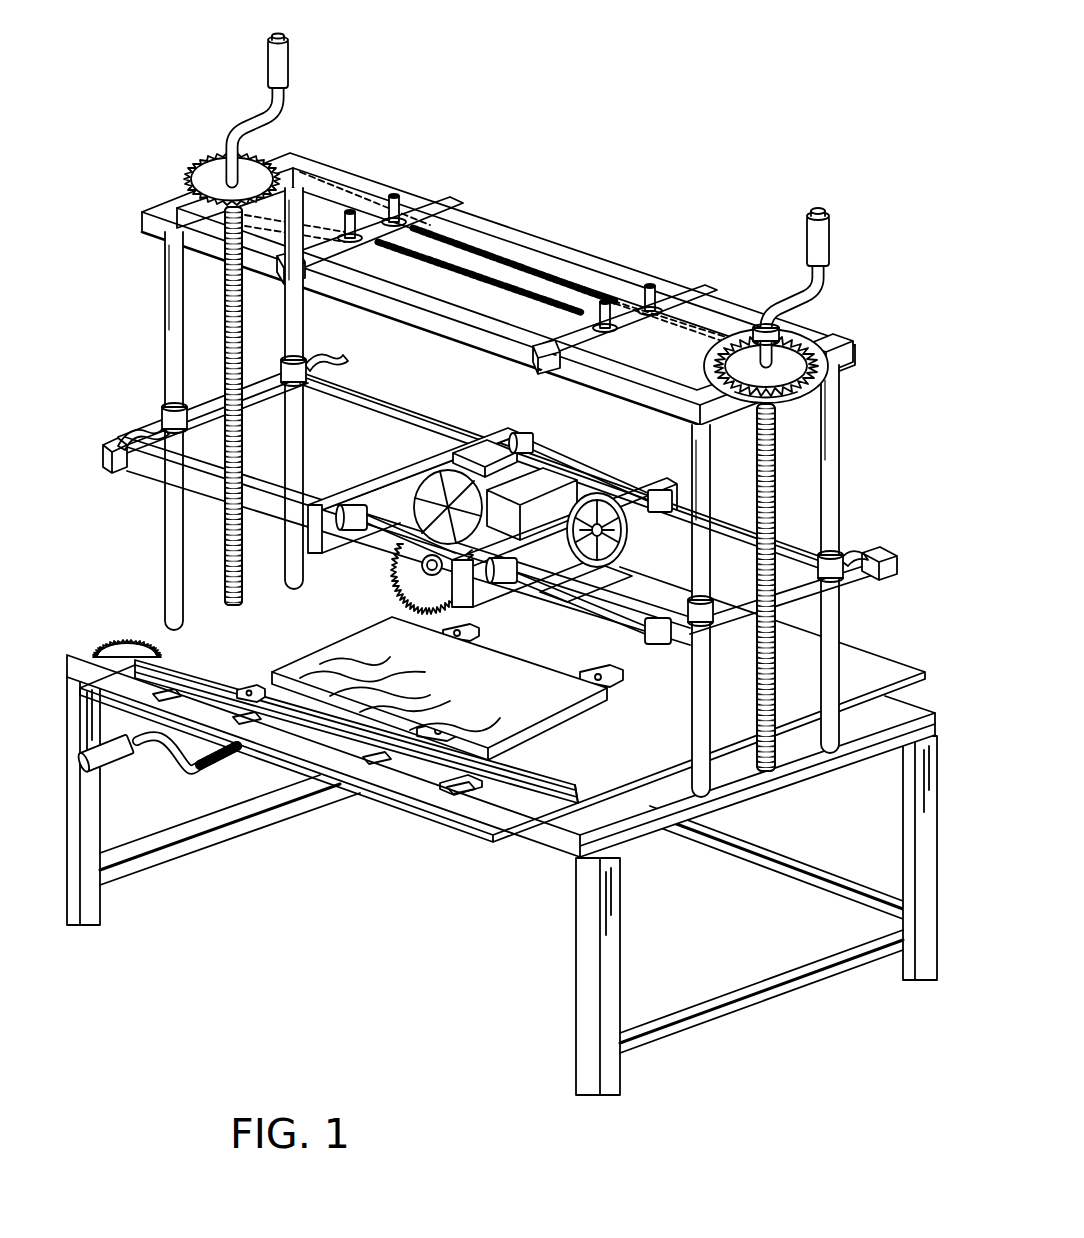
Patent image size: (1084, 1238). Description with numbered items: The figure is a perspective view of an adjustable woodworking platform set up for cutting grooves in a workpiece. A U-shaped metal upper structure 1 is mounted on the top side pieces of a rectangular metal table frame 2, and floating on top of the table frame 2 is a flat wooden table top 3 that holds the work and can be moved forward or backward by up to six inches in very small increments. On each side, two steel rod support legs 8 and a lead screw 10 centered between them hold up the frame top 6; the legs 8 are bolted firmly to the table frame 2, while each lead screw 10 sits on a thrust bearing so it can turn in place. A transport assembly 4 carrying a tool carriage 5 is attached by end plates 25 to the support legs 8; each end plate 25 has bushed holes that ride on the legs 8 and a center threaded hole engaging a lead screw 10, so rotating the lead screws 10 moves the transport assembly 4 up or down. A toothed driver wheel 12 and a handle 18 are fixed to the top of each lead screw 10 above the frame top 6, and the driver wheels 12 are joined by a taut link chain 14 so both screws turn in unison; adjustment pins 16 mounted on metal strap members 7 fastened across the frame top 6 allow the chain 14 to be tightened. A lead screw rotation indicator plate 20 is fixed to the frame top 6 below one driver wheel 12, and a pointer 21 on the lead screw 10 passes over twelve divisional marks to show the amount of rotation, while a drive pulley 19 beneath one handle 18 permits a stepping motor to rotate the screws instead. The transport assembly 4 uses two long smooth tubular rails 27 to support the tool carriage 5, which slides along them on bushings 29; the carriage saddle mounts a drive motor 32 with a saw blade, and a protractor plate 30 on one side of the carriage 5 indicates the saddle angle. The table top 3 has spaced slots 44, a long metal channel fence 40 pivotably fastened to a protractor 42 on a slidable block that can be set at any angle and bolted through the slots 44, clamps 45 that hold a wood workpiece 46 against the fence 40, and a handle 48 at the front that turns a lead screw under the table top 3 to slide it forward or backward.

The upper structure 1 is at (556, 238).
The table frame 2 is at (574, 982).
The table top 3 is at (362, 800).
The transport assembly 4 is at (882, 553).
The tool carriage 5 is at (398, 455).
The frame top 6 is at (502, 222).
The strap members 7 is at (440, 204).
The support legs 8 is at (166, 316).
The lead screw 10 is at (233, 373).
The driver wheel 12 is at (205, 166).
The link chain 14 is at (360, 200).
The adjustment pins 16 is at (650, 286).
The handle 18 is at (288, 78).
The drive pulley 19 is at (782, 326).
The lead screw rotation indicator plate 20 is at (854, 362).
The pointer 21 is at (826, 373).
The end plates 25 is at (162, 420).
The tubular rails 27 is at (397, 393).
The bushings 29 is at (535, 440).
The protractor plate 30 is at (616, 556).
The drive motor 32 is at (482, 445).
The channel fence 40 is at (542, 792).
The protractor 42 is at (128, 638).
The slots 44 is at (456, 794).
The clamps 45 is at (270, 698).
The workpiece 46 is at (454, 674).
The handle 48 is at (189, 776).